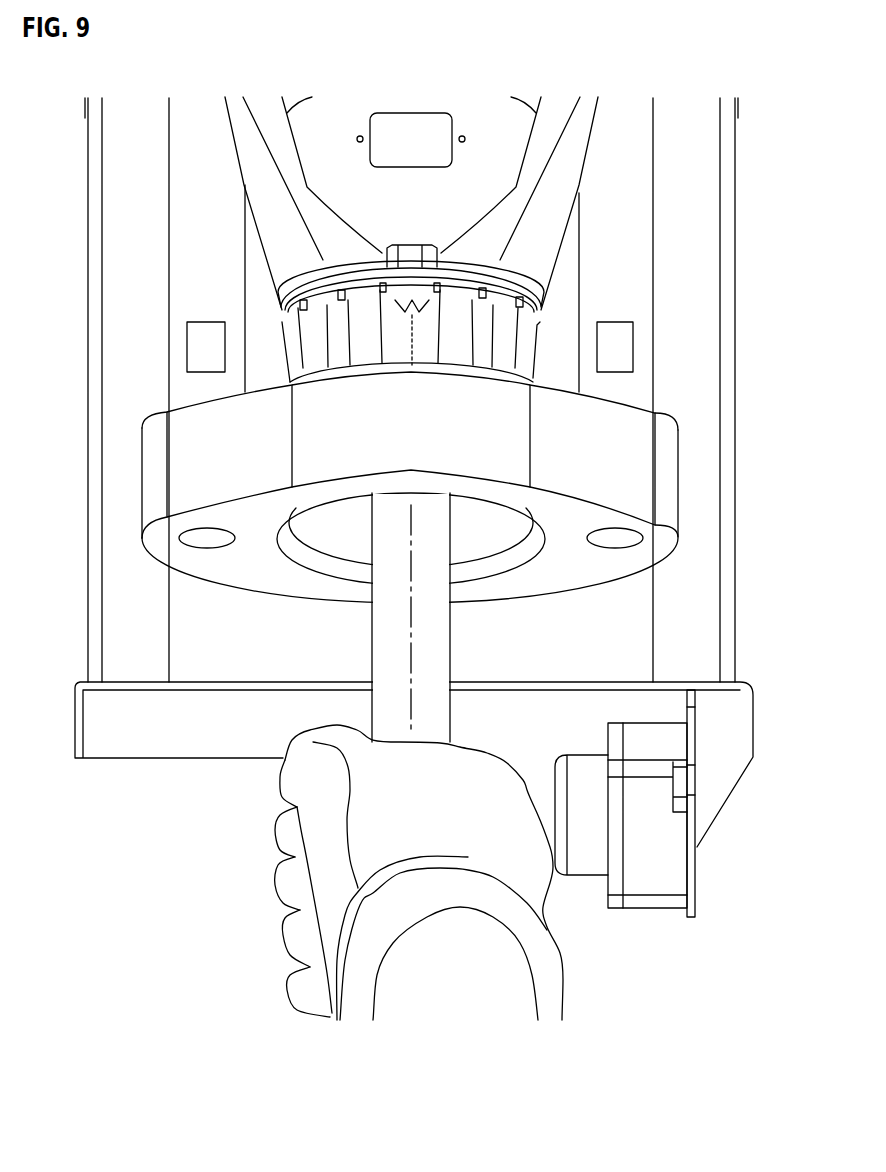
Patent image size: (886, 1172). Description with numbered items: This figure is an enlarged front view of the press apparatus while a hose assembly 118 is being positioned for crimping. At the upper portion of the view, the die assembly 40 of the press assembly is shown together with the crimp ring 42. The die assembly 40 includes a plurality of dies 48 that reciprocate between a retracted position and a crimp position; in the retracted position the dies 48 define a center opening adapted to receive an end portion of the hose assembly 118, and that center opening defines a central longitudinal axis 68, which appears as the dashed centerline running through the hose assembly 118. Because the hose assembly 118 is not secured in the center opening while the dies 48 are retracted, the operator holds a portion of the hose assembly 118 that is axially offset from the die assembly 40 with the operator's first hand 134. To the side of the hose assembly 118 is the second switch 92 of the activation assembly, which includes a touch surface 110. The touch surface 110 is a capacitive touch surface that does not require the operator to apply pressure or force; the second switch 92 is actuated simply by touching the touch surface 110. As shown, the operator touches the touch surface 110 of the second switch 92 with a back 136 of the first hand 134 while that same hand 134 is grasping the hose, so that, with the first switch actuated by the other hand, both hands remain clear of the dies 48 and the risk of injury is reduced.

The die assembly 40 is at (558, 315).
The dies 48 is at (538, 342).
The crimp ring 42 is at (690, 457).
The central longitudinal axis 68 is at (408, 603).
The hose assembly 118 is at (365, 650).
The touch surface 110 is at (557, 790).
The second switch 92 is at (658, 917).
The first hand 134 is at (322, 880).
The back 136 is at (535, 865).